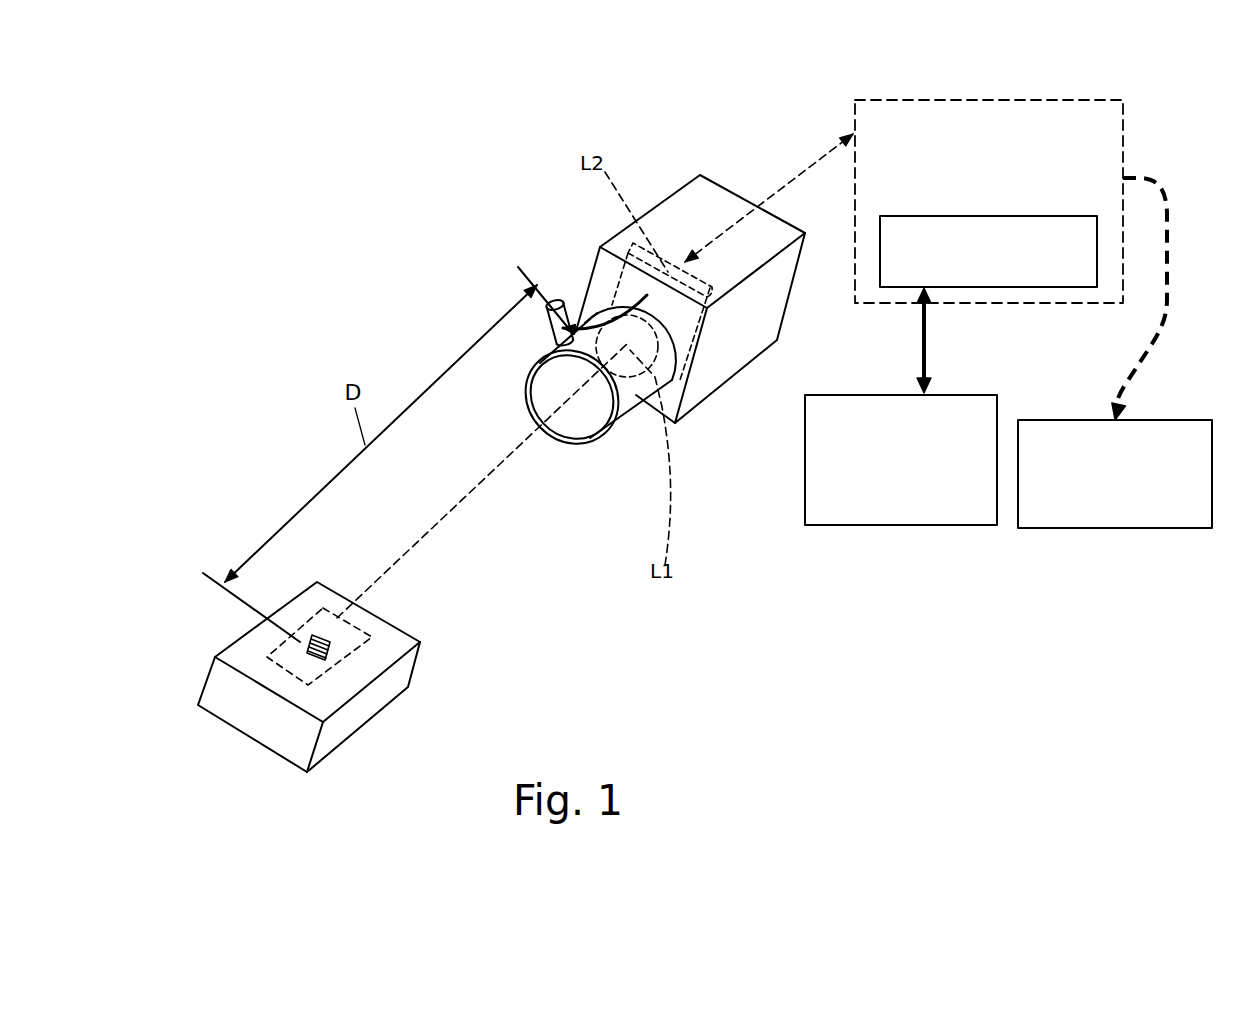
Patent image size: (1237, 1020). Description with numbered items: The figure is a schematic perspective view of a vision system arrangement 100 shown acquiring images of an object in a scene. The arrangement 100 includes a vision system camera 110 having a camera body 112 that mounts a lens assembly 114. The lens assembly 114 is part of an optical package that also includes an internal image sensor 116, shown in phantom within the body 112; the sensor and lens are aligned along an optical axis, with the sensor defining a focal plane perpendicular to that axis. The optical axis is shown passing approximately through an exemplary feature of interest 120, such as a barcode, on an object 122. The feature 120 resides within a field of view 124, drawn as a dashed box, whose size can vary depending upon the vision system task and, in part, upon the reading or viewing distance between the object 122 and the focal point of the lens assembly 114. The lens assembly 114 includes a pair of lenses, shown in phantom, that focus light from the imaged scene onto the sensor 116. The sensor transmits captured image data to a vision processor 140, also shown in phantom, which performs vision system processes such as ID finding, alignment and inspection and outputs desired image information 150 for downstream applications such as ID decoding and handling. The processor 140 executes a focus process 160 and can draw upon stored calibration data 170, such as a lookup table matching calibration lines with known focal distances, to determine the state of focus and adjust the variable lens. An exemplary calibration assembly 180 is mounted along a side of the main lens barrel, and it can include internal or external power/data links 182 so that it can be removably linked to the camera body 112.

The vision system arrangement 100 is at (455, 281).
The vision system camera 110 is at (720, 403).
The camera body 112 is at (752, 342).
The lens assembly 114 is at (634, 398).
The image sensor 116 is at (675, 262).
The feature of interest 120 is at (333, 647).
The object 122 is at (365, 700).
The field of view 124 is at (376, 634).
The vision processor 140 is at (969, 190).
The image information 150 is at (1097, 505).
The focus process 160 is at (969, 275).
The stored calibration data 170 is at (882, 503).
The calibration assembly 180 is at (542, 352).
The power/data links 182 is at (600, 372).